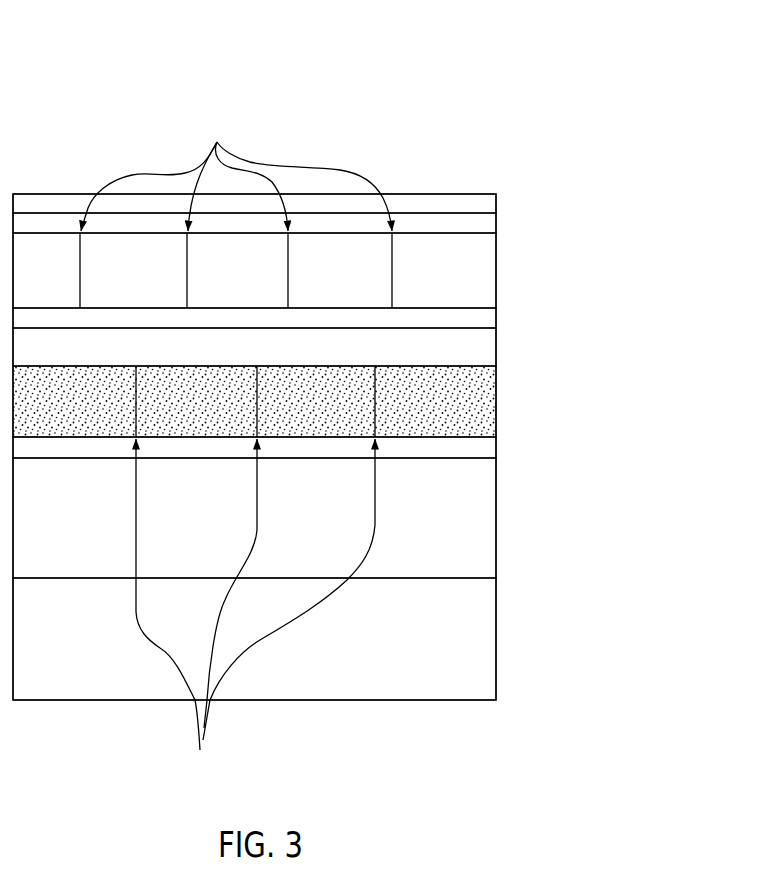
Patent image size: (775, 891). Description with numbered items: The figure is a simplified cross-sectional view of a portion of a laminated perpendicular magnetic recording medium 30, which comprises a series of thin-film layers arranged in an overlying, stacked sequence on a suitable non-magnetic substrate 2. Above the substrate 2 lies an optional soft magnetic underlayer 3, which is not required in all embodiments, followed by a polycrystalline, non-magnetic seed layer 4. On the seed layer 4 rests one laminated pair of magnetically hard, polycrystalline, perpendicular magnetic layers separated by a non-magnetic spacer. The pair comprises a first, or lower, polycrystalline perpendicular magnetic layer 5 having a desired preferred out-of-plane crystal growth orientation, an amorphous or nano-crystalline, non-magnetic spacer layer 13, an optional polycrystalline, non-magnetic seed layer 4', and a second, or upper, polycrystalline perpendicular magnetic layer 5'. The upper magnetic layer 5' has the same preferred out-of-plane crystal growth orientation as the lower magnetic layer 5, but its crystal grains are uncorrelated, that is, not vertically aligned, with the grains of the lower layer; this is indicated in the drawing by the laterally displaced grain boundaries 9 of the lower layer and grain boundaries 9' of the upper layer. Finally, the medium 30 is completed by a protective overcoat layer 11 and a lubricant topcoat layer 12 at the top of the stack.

The laminated perpendicular magnetic recording medium 30 is at (112, 136).
The lubricant topcoat layer 12 is at (503, 199).
The protective overcoat layer 11 is at (503, 220).
The second polycrystalline perpendicular magnetic layer 5' is at (385, 270).
The grain boundaries 9' is at (236, 211).
The seed layer 4' is at (350, 323).
The spacer layer 13 is at (503, 347).
The first polycrystalline perpendicular magnetic layer 5 is at (385, 413).
The grain boundaries 9 is at (211, 572).
The seed layer 4 is at (345, 464).
The soft magnetic underlayer 3 is at (503, 523).
The substrate 2 is at (503, 641).